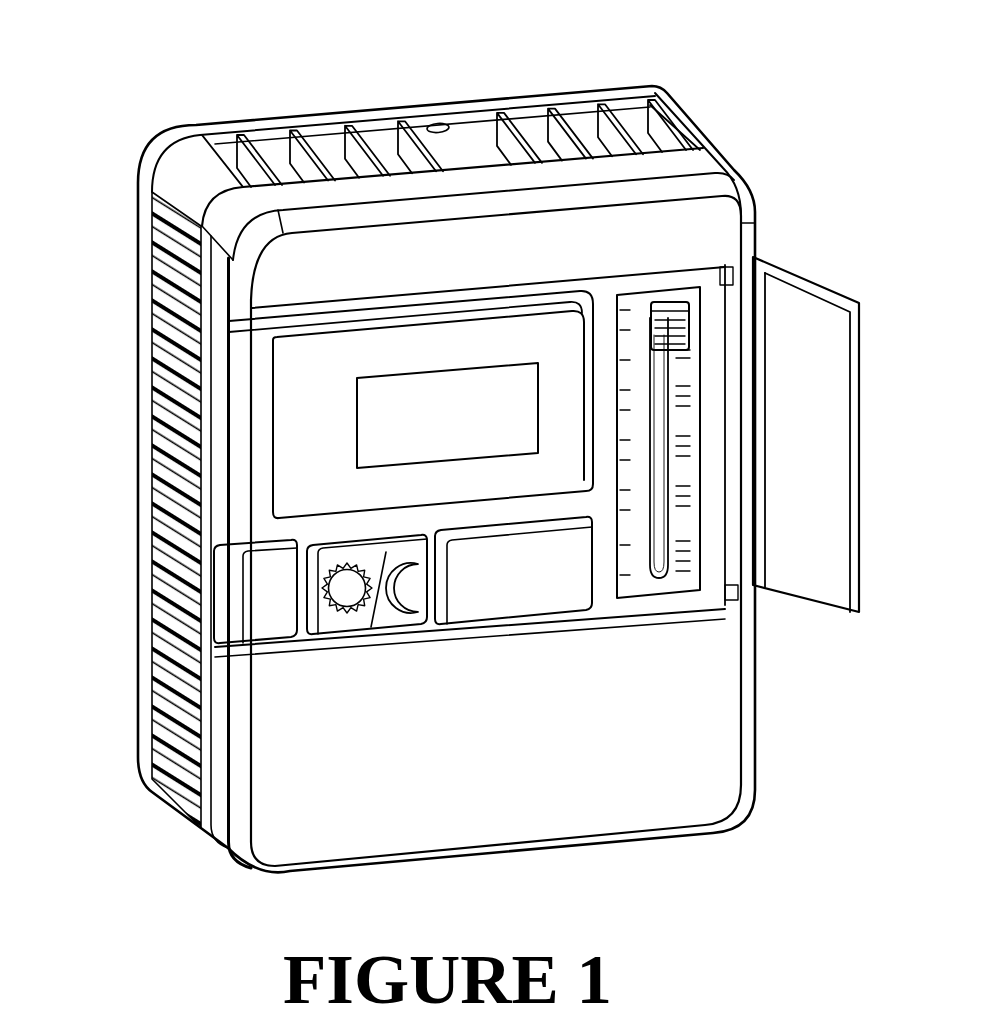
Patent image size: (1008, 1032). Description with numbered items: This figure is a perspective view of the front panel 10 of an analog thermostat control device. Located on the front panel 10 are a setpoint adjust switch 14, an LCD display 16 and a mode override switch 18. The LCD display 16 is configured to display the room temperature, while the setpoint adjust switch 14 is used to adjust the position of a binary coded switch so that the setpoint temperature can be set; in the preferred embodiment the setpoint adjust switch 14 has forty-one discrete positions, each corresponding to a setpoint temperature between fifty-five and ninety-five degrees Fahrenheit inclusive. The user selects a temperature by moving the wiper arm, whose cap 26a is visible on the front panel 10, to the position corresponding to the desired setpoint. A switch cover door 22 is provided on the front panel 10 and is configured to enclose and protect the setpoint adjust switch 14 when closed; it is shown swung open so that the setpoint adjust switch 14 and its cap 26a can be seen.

The front panel 10 is at (361, 78).
The setpoint adjust switch 14 is at (672, 492).
The LCD display 16 is at (380, 432).
The mode override switch 18 is at (332, 618).
The switch cover door 22 is at (862, 310).
The cap 26a is at (685, 306).